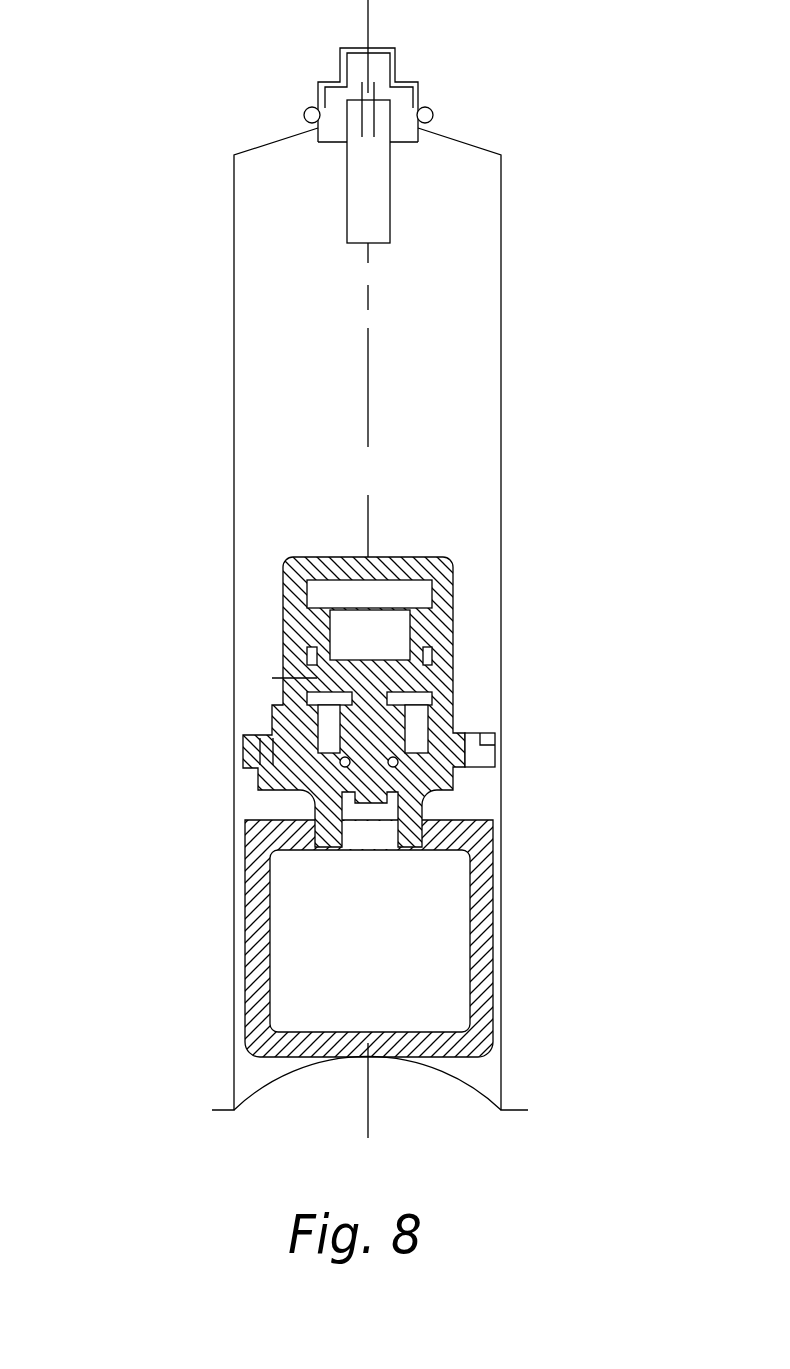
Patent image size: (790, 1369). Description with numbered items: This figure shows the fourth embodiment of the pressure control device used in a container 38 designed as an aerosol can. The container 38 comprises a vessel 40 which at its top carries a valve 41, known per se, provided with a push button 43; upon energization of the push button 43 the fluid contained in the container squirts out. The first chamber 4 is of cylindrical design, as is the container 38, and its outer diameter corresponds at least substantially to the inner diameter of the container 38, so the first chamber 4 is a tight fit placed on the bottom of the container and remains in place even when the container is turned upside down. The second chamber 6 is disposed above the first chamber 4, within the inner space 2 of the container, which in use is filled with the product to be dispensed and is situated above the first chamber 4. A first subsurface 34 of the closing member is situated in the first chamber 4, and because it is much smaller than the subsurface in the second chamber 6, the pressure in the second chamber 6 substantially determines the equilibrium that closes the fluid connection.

The inner space 2 is at (313, 427).
The first chamber 4 is at (327, 952).
The second chamber 6 is at (383, 638).
The first subsurface 34 is at (284, 828).
The container 38 is at (442, 447).
The vessel 40 is at (501, 317).
The valve 41 is at (400, 110).
The push button 43 is at (395, 65).